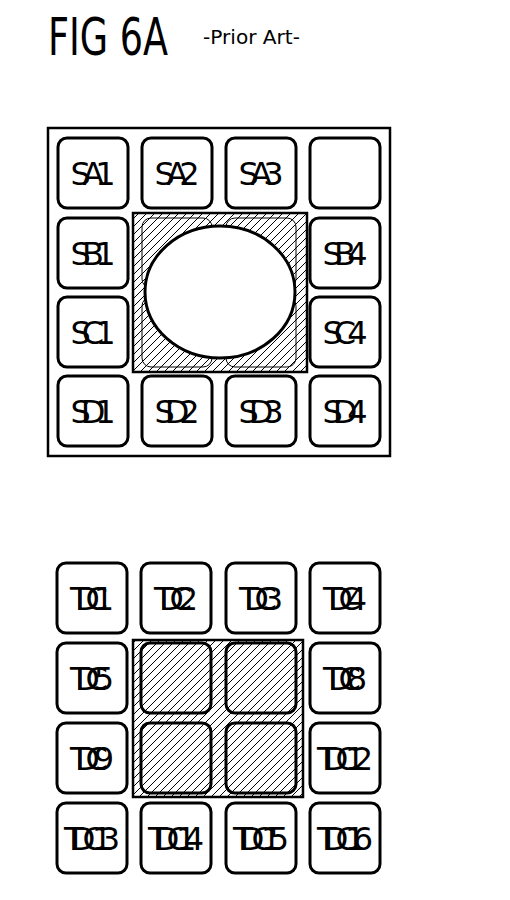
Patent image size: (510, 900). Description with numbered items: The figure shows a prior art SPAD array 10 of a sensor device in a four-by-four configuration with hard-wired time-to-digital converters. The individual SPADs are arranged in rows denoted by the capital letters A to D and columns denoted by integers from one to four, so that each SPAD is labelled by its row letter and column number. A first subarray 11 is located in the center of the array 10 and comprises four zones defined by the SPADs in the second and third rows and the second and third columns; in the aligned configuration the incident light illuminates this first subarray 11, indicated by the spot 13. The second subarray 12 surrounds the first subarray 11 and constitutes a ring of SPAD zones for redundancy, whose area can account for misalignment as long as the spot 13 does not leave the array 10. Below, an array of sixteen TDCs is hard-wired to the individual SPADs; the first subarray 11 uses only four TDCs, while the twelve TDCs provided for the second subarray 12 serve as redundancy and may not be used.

The SPAD array 10 is at (304, 128).
The first subarray 11 is at (304, 233).
The second subarray 12 is at (365, 158).
The spot 13 is at (223, 238).